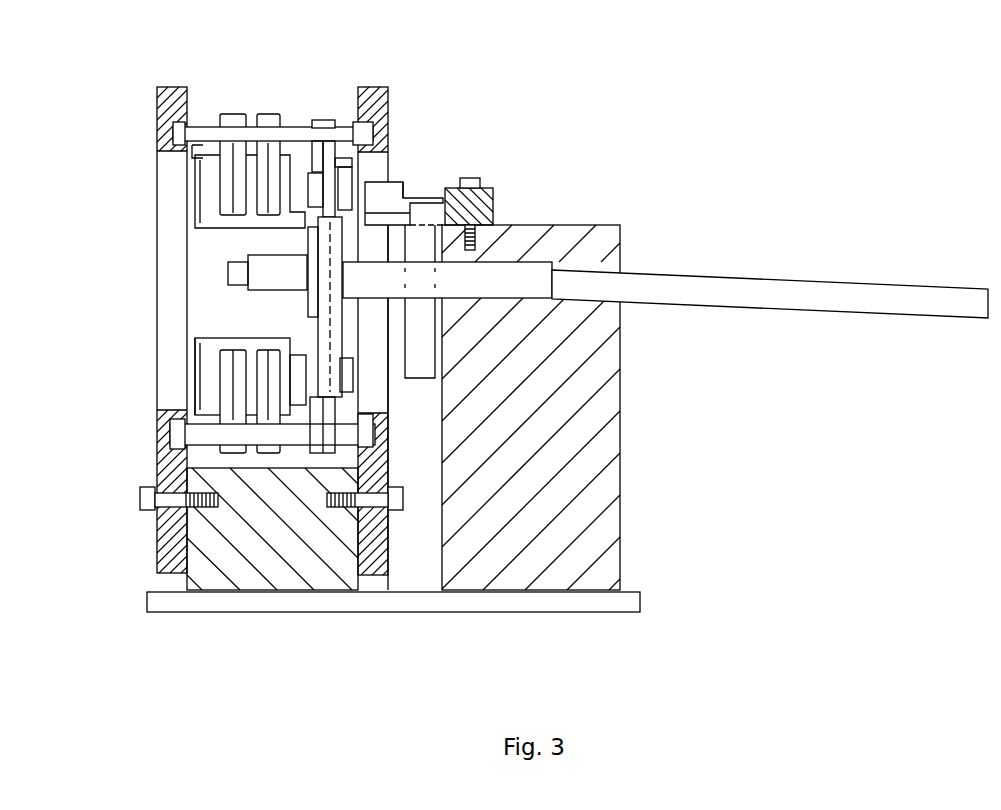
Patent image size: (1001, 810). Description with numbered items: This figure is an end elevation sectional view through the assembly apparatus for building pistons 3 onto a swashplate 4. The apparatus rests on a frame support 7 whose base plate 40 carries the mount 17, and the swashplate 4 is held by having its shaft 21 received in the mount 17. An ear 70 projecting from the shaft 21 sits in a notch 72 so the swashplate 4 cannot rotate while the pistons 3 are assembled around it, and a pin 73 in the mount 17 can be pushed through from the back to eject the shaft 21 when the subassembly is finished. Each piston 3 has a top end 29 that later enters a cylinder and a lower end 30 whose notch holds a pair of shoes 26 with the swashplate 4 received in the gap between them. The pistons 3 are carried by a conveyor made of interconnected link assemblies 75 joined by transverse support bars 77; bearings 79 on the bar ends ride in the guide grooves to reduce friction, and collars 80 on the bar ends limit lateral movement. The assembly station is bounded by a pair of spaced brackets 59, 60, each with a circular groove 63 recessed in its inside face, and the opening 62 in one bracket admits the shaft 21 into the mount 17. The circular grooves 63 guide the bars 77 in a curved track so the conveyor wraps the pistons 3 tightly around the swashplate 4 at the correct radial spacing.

The piston 3 is at (207, 228).
The swashplate 4 is at (318, 330).
The frame support 7 is at (146, 600).
The mount 17 is at (618, 250).
The shaft 21 is at (227, 268).
The shoe 26 is at (315, 375).
The top end 29 is at (195, 352).
The lower end 30 is at (352, 367).
The base plate 40 is at (405, 612).
The bracket 59 is at (165, 87).
The bracket 60 is at (372, 87).
The opening 62 is at (404, 184).
The circular groove 63 is at (180, 147).
The ear 70 is at (406, 190).
The notch 72 is at (493, 200).
The pin 73 is at (776, 279).
The link assembly 75 is at (267, 108).
The transverse support bar 77 is at (300, 127).
The bearing 79 is at (178, 126).
The collar 80 is at (203, 127).